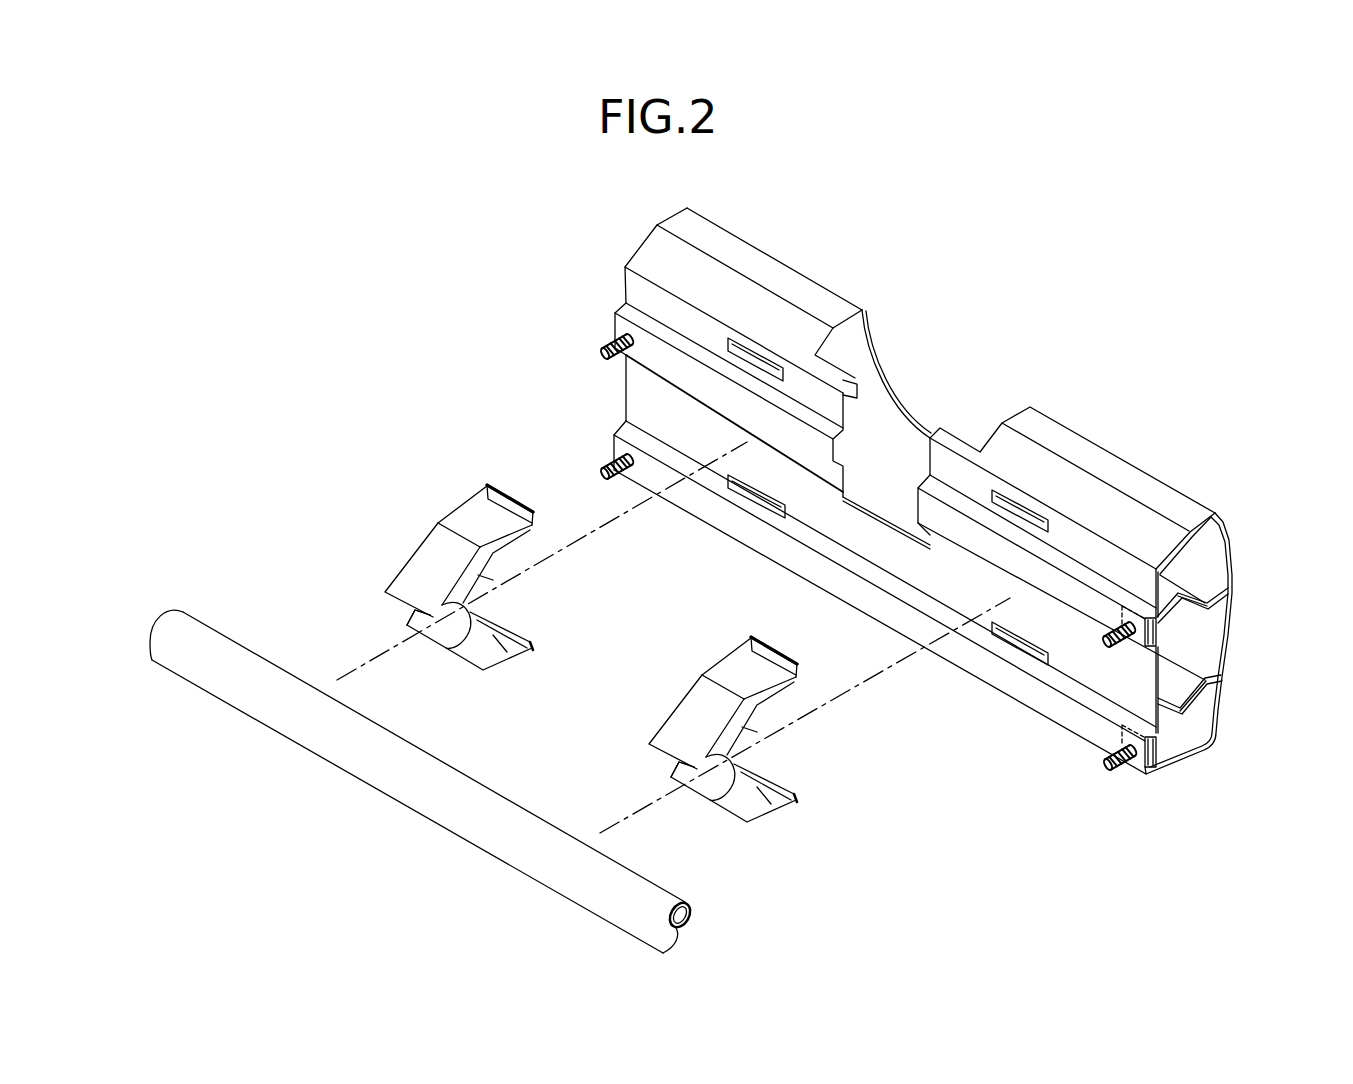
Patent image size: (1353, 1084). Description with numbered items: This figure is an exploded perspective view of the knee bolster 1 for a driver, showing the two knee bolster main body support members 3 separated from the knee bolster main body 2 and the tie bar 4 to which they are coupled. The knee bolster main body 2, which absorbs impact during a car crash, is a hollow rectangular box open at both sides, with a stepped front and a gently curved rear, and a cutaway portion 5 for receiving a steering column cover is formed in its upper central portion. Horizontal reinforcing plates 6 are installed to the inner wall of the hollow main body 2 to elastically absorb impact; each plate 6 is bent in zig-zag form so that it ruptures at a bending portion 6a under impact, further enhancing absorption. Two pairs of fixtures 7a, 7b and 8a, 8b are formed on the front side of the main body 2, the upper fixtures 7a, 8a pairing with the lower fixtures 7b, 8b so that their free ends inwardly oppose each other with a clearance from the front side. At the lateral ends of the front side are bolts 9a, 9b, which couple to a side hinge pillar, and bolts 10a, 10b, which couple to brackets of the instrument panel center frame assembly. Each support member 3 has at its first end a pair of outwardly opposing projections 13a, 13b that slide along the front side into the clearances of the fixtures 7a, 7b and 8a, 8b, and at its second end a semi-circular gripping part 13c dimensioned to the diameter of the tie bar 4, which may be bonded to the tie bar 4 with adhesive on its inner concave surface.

The knee bolster 1 is at (970, 491).
The knee bolster main body 2 is at (1027, 688).
The knee bolster main body support member 3 is at (430, 562).
The tie bar 4 is at (420, 763).
The cutaway portion 5 is at (920, 347).
The reinforcing plate 6 is at (856, 380).
The bending portion 6a is at (1222, 592).
The upper fixture 7a is at (1033, 514).
The lower fixture 7b is at (1017, 648).
The upper fixture 8a is at (760, 357).
The lower fixture 8b is at (753, 492).
The bolt 9a is at (1112, 638).
The bolt 9b is at (1112, 758).
The bolt 10a is at (607, 347).
The bolt 10b is at (607, 463).
The projection 13a is at (500, 502).
The projection 13b is at (531, 651).
The gripping part 13c is at (422, 622).